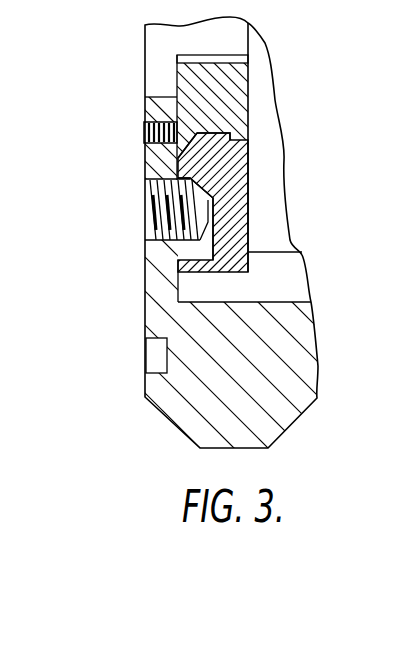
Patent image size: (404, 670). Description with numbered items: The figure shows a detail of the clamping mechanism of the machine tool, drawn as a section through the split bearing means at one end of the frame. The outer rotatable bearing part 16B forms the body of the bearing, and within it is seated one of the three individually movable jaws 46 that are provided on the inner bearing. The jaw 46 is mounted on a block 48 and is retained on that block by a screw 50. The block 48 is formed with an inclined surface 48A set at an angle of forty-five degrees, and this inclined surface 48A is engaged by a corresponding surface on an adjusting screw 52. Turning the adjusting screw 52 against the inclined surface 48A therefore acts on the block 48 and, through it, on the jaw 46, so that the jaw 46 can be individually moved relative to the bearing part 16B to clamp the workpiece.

The outer rotatable bearing part 16B is at (297, 363).
The jaw 46 is at (232, 93).
The block 48 is at (248, 197).
The inclined surface 48A is at (207, 185).
The screw 50 is at (150, 104).
The adjusting screw 52 is at (148, 207).